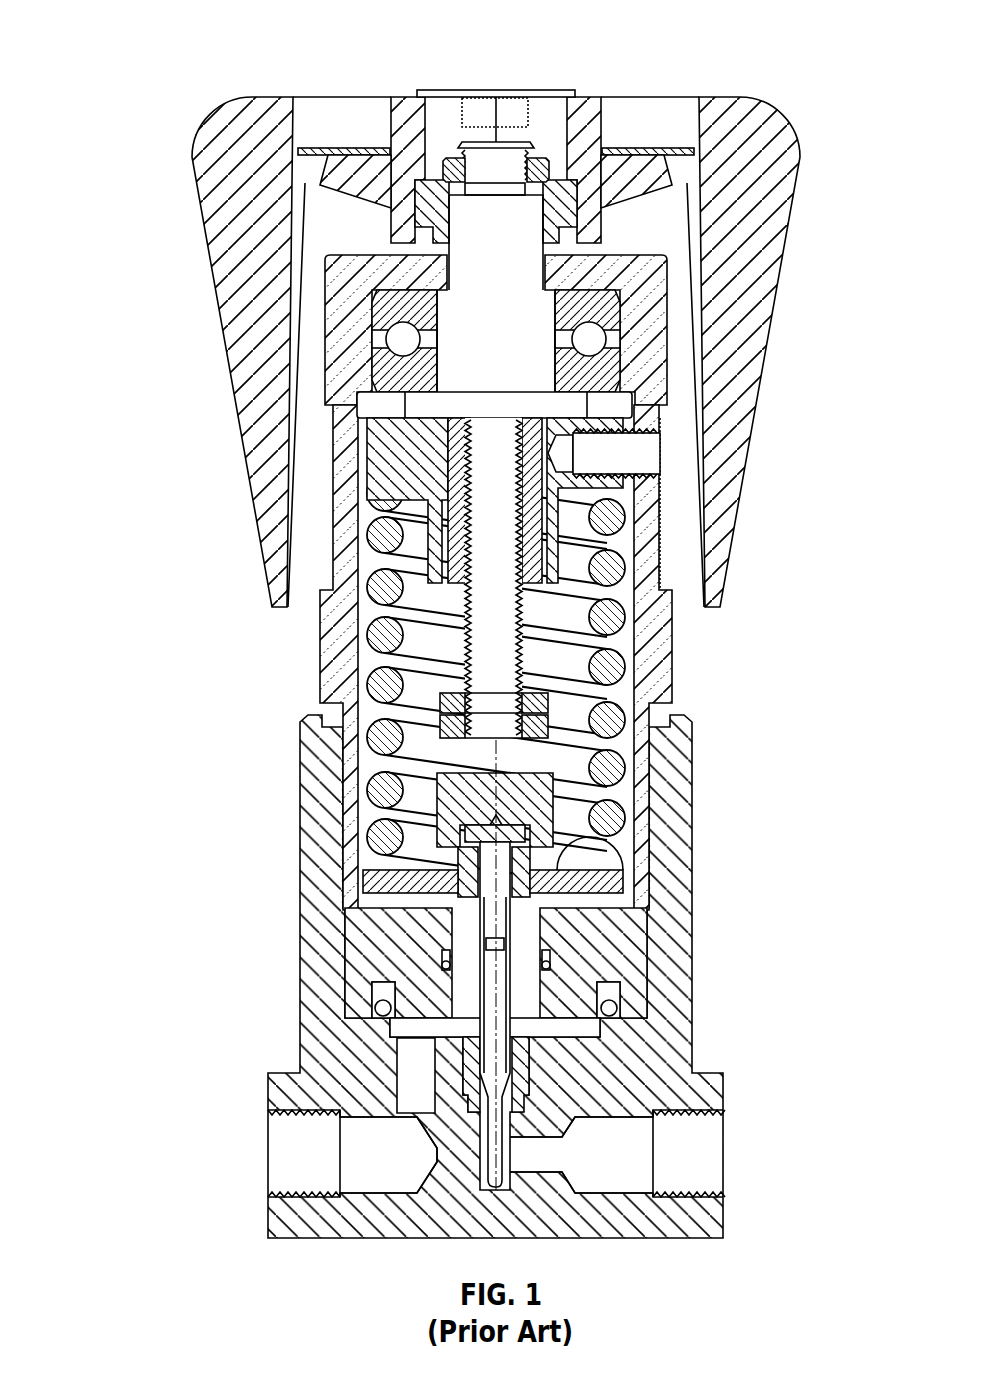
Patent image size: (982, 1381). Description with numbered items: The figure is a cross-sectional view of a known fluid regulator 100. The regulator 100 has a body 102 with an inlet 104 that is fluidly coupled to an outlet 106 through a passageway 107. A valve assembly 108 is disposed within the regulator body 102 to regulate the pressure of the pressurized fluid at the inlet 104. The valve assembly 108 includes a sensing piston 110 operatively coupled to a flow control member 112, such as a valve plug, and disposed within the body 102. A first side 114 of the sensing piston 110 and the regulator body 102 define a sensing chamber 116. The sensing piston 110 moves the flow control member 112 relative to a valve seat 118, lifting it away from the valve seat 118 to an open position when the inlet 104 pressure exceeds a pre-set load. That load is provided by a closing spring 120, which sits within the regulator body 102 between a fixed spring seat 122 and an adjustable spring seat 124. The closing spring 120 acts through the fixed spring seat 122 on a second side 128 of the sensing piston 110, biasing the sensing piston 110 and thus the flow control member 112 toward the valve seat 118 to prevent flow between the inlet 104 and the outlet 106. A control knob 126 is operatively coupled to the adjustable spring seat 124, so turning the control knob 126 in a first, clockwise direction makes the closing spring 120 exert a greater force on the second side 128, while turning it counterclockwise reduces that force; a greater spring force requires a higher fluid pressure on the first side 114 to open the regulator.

The fluid regulator 100 is at (183, 50).
The body 102 is at (693, 830).
The inlet 104 is at (270, 1150).
The outlet 106 is at (722, 1150).
The passageway 107 is at (497, 1117).
The valve assembly 108 is at (578, 935).
The sensing piston 110 is at (547, 983).
The flow control member 112 is at (500, 1062).
The first side 114 is at (385, 1020).
The sensing chamber 116 is at (375, 1015).
The valve seat 118 is at (403, 1024).
The closing spring 120 is at (577, 615).
The fixed spring seat 122 is at (382, 883).
The adjustable spring seat 124 is at (380, 465).
The control knob 126 is at (767, 232).
The second side 128 is at (585, 866).